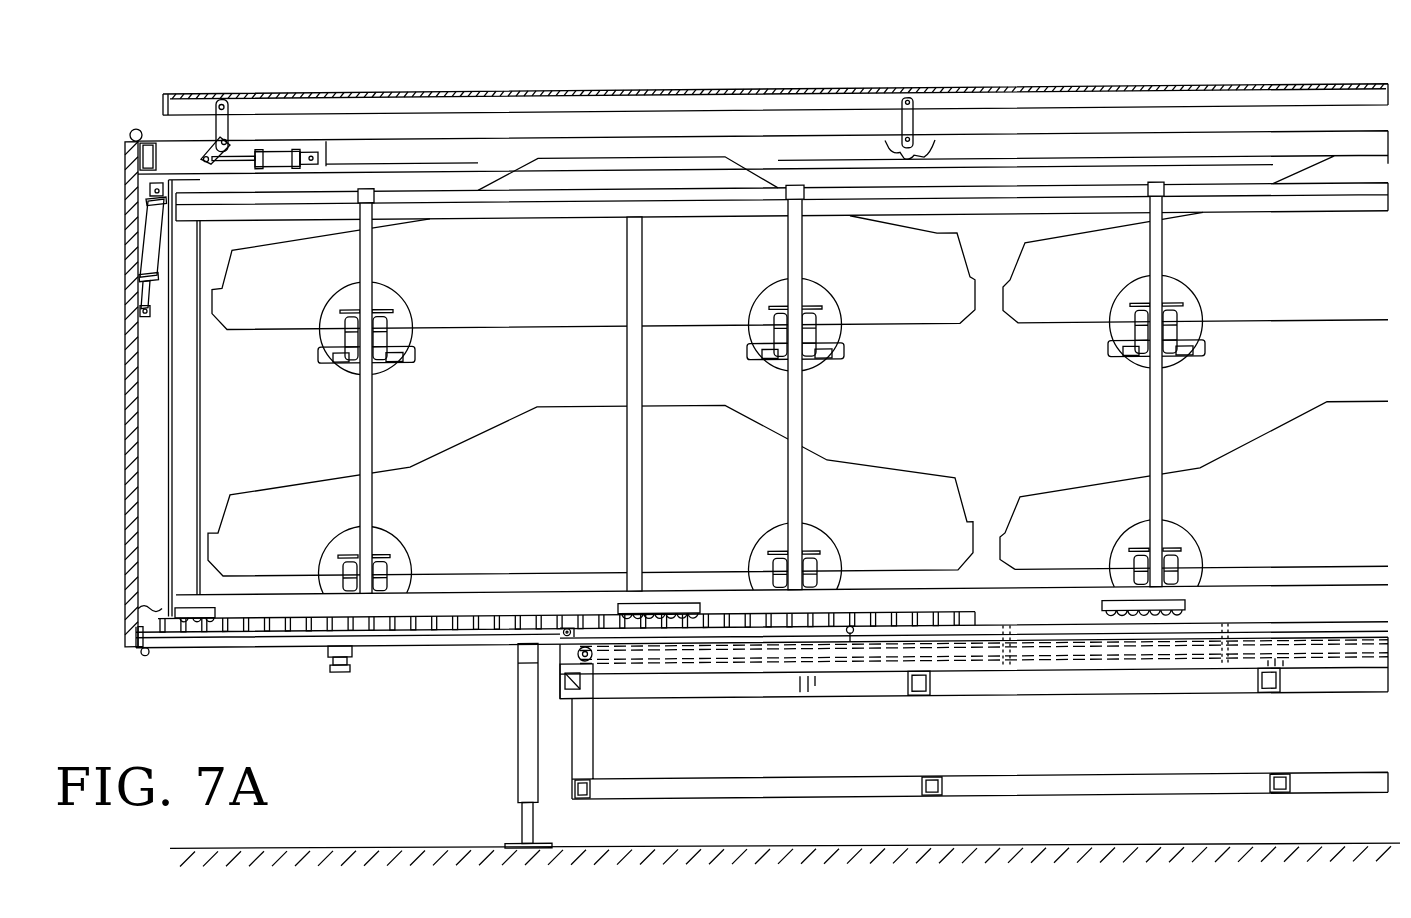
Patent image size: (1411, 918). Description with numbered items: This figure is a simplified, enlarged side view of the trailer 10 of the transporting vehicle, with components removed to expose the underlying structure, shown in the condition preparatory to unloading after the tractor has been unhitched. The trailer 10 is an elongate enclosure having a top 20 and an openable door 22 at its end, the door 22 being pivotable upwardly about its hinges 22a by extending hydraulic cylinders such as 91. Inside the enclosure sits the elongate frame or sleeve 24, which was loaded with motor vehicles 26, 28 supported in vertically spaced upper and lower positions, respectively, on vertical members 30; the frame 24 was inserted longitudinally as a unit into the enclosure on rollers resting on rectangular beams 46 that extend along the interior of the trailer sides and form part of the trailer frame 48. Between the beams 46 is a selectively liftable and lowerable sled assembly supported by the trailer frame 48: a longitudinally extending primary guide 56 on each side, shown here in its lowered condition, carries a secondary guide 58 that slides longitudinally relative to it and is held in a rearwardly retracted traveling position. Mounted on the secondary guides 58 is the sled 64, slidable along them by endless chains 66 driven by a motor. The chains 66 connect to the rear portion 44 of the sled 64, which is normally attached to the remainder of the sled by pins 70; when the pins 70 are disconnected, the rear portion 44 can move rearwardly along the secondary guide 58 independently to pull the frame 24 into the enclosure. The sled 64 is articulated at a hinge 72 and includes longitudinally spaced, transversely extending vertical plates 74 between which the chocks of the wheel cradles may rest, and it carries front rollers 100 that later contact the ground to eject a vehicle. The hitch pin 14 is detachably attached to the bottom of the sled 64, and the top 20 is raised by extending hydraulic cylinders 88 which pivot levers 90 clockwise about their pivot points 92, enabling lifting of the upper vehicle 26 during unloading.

The trailer 10 is at (993, 70).
The hitch pin 14 is at (328, 652).
The top 20 is at (1188, 91).
The openable door 22 is at (124, 400).
The hinges 22a is at (133, 124).
The frame or sleeve 24 is at (199, 403).
The motor vehicle 26 is at (523, 301).
The motor vehicle 28 is at (488, 443).
The vertical members 30 is at (373, 426).
The rear portion of sled 44 is at (904, 615).
The rectangular beams 46 is at (166, 611).
The trailer frame 48 is at (174, 136).
The primary guide 56 is at (713, 690).
The secondary guide 58 is at (1064, 676).
The sled 64 is at (455, 638).
The endless chains 66 is at (766, 649).
The pins 70 is at (850, 634).
The hinge 72 is at (567, 622).
The vertical plates 74 is at (510, 615).
The hydraulic cylinders 88 is at (289, 146).
The levers 90 is at (216, 116).
The hydraulic cylinders 91 is at (143, 232).
The pivot points 92 is at (228, 136).
The front rollers 100 is at (144, 654).